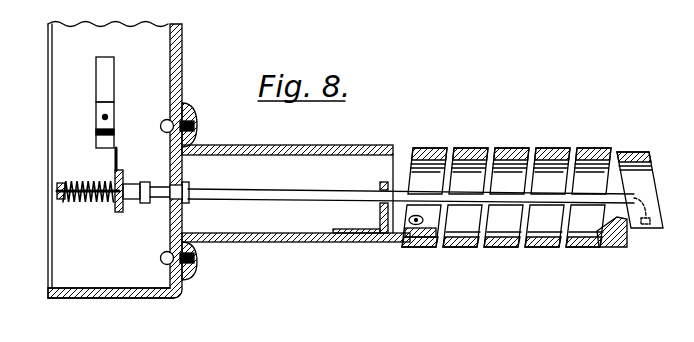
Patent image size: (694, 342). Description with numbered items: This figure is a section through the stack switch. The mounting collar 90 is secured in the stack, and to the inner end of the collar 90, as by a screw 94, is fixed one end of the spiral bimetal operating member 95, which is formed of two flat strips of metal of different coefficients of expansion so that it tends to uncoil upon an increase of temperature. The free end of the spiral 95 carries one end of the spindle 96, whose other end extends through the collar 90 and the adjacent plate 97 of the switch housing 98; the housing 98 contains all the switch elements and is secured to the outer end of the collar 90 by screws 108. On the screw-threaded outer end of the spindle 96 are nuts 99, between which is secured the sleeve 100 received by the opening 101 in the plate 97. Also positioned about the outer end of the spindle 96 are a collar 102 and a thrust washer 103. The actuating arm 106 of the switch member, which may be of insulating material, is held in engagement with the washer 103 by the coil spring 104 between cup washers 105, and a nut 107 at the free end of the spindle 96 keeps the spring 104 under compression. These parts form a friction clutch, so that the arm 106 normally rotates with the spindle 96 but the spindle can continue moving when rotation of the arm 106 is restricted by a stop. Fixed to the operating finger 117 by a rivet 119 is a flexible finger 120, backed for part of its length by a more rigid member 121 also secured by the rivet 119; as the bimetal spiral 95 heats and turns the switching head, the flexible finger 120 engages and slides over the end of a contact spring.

The mounting collar 90 is at (300, 146).
The screw 94 is at (411, 243).
The spiral bimetal operating member 95 is at (446, 246).
The spindle 96 is at (320, 189).
The plate 97 is at (182, 53).
The switch housing 98 is at (125, 298).
The nuts 99 is at (143, 182).
The sleeve 100 is at (157, 198).
The opening 101 is at (172, 201).
The collar 102 is at (130, 184).
The thrust washer 103 is at (121, 170).
The coil spring 104 is at (90, 181).
The cup washers 105 is at (60, 200).
The actuating arm 106 is at (118, 168).
The nut 107 is at (57, 191).
The screws 108 is at (195, 125).
The operating finger 117 is at (107, 68).
The rivet 119 is at (108, 114).
The flexible finger 120 is at (53, 281).
The rigid member 121 is at (105, 130).